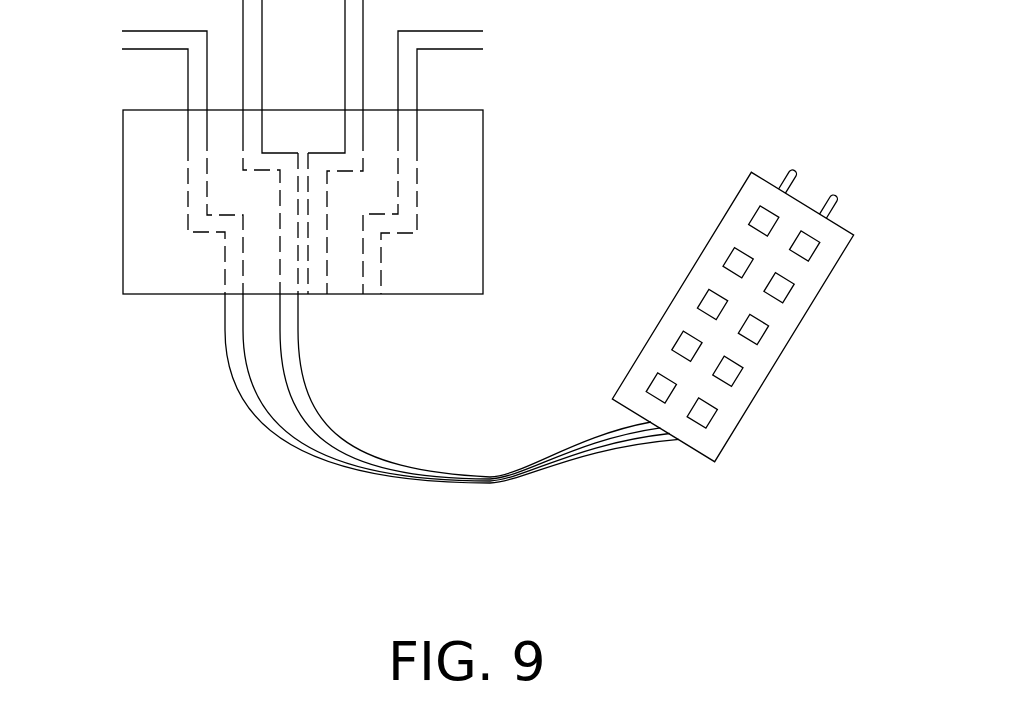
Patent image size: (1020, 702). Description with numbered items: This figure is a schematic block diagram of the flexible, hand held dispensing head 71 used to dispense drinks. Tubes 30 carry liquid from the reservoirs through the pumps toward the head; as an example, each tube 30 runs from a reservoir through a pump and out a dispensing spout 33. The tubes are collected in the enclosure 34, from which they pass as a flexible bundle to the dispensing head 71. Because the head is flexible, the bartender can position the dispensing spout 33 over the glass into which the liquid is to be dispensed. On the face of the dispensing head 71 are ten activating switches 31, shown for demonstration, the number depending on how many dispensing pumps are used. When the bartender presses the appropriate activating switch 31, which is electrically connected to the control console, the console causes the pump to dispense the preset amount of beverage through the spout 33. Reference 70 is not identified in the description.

The tube 30 is at (176, 50).
The enclosure 34 is at (483, 213).
The cable assembly 70 is at (258, 573).
The flexible hand held dispensing head 71 is at (845, 249).
The activating switch 31 is at (718, 412).
The dispensing spout 33 is at (783, 172).